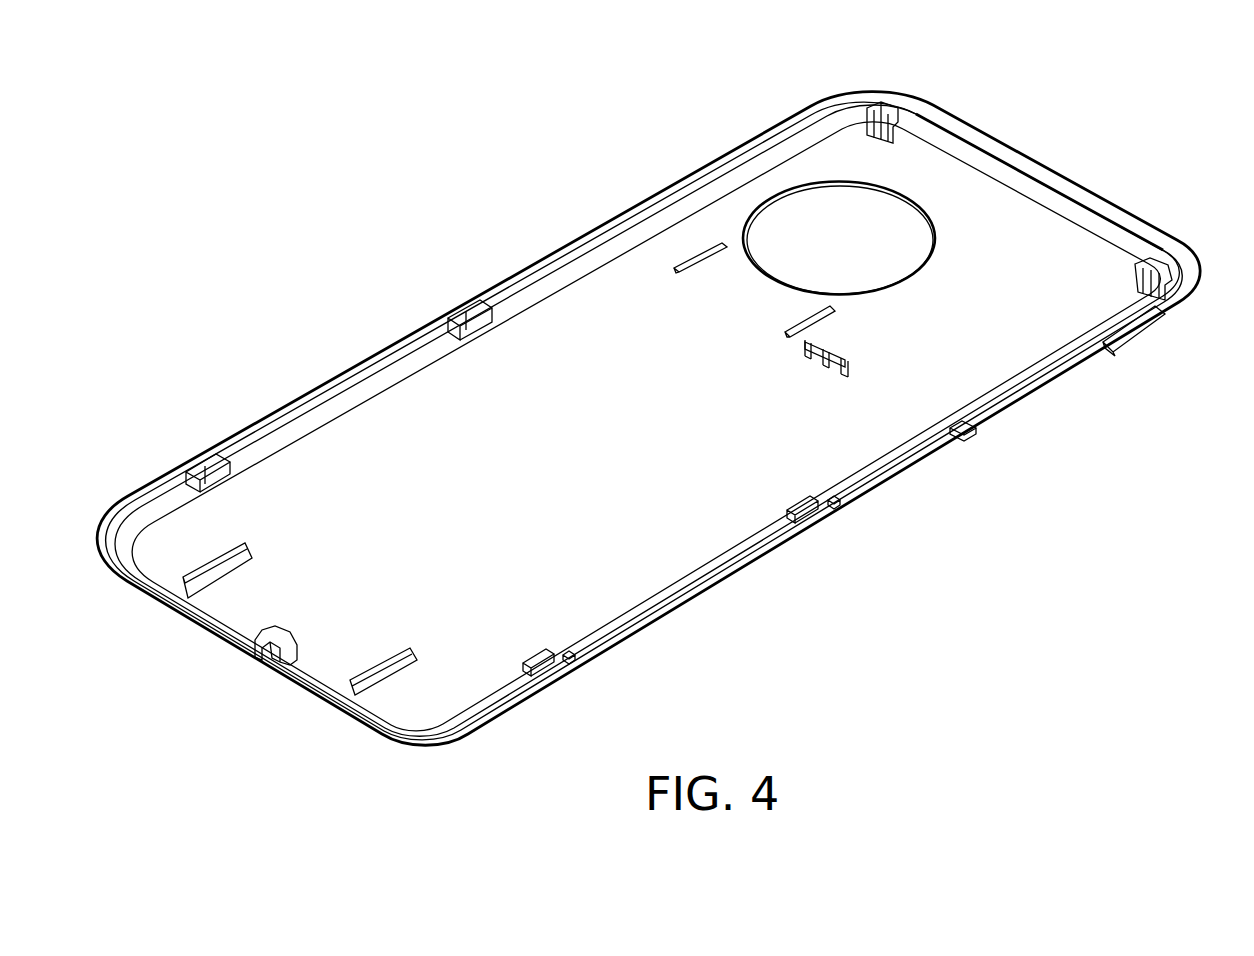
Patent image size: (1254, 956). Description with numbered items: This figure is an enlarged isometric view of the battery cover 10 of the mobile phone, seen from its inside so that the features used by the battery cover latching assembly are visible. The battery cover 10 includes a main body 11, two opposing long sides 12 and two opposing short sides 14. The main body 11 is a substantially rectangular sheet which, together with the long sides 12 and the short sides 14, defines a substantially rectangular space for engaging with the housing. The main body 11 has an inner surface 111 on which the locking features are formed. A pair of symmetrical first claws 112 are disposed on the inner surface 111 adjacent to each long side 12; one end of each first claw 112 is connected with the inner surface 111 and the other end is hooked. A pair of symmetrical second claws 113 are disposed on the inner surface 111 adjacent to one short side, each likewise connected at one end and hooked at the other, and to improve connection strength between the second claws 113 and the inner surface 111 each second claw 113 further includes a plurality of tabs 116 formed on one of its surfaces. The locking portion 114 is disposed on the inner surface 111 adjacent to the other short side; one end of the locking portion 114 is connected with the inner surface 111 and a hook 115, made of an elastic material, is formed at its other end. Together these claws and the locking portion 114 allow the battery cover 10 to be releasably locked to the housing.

The battery cover 10 is at (670, 407).
The main body 11 is at (670, 407).
The long sides 12 is at (393, 342).
The short sides 14 is at (1125, 212).
The inner surface 111 is at (1025, 362).
The first claws 112 is at (210, 460).
The second claws 113 is at (885, 105).
The locking portion 114 is at (277, 660).
The hook 115 is at (260, 650).
The tabs 116 is at (1168, 316).